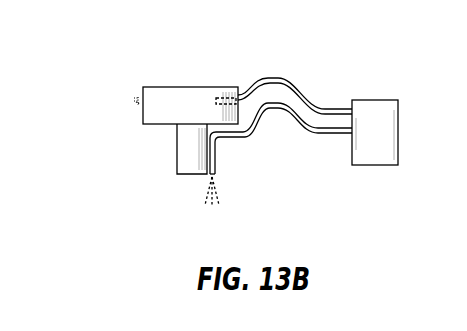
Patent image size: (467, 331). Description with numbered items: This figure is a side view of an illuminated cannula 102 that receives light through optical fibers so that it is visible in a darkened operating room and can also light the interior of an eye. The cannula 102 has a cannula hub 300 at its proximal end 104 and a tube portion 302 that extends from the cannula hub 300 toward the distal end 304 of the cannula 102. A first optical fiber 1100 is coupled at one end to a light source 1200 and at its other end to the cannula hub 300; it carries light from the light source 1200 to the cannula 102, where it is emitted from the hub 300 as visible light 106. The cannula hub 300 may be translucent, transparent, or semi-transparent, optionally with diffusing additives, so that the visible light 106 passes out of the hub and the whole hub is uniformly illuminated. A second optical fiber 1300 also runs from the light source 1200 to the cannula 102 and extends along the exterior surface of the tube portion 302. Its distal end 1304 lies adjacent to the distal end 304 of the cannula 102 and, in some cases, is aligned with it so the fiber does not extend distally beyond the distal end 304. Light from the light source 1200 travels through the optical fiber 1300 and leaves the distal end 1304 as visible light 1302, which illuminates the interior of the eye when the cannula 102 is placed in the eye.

The cannula 102 is at (120, 62).
The proximal end 104 is at (134, 88).
The visible light 106 is at (135, 106).
The cannula hub 300 is at (193, 87).
The tube portion 302 is at (176, 138).
The distal end 304 is at (170, 165).
The optical fiber 1100 is at (284, 78).
The light source 1200 is at (376, 100).
The optical fiber 1300 is at (331, 134).
The visible light 1302 is at (220, 197).
The distal end 1304 is at (214, 174).